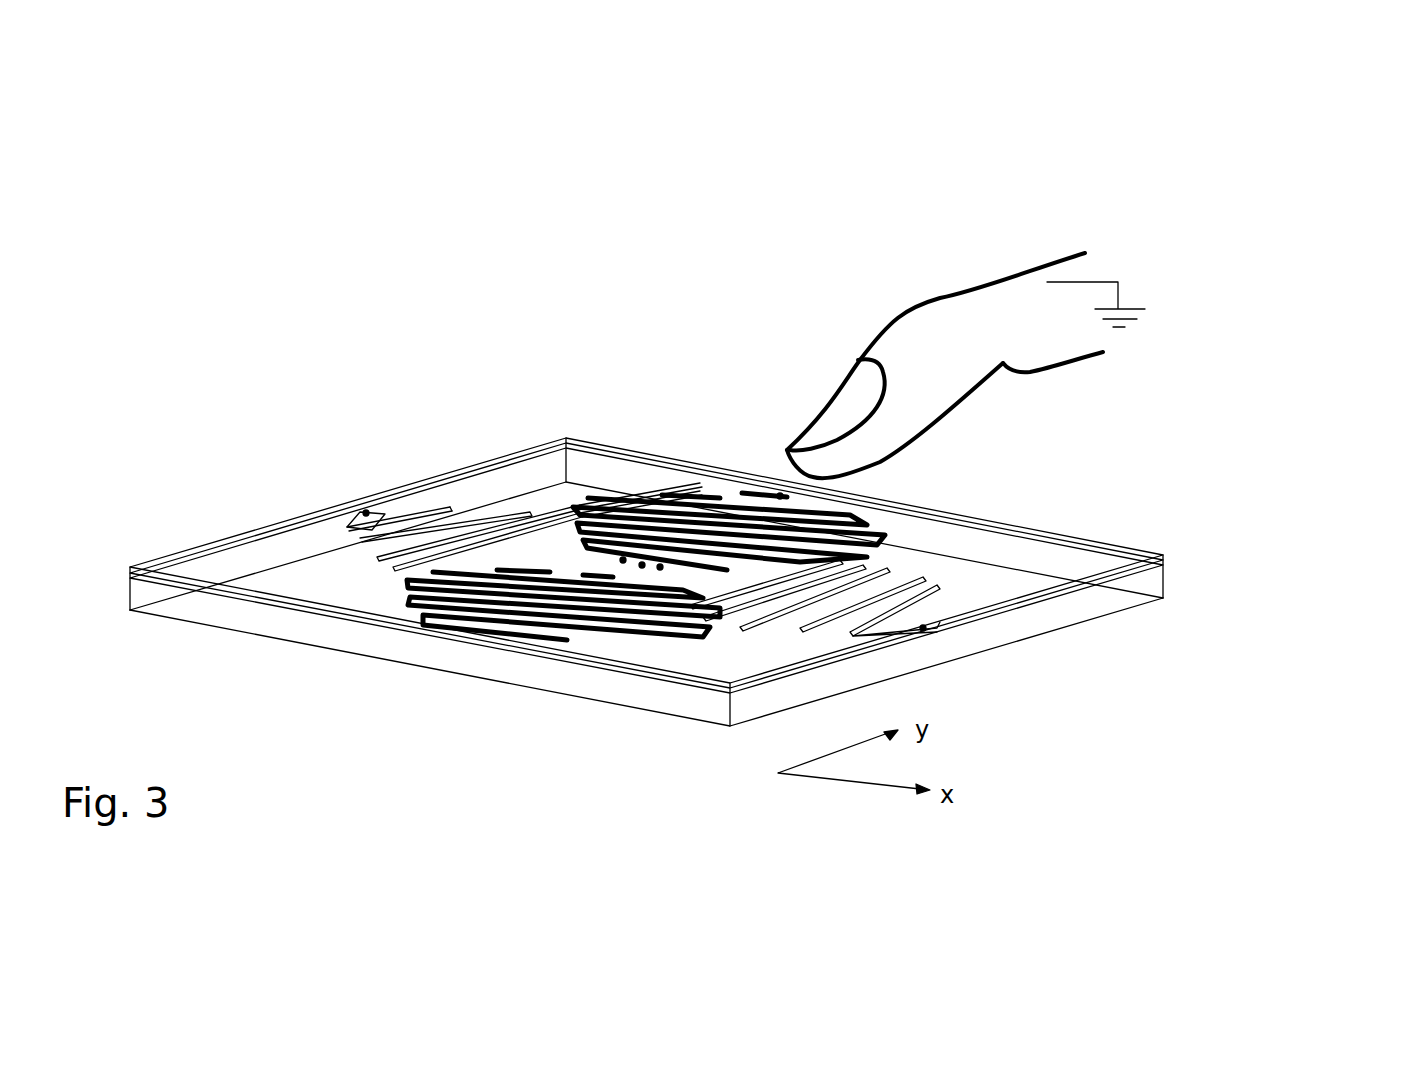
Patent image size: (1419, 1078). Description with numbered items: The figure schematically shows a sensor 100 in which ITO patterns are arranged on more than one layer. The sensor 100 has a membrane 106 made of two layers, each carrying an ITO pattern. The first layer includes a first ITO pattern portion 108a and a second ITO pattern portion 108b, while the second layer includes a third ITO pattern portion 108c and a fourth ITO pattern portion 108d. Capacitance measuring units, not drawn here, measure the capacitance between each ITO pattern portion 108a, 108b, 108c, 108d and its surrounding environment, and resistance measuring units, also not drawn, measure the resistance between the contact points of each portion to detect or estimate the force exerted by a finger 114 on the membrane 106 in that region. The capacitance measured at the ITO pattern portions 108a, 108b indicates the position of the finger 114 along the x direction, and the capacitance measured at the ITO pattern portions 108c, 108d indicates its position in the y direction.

The sensor 100 is at (1215, 98).
The membrane 106 is at (1178, 552).
The first ITO pattern portion 108a is at (485, 520).
The second ITO pattern portion 108b is at (893, 594).
The third ITO pattern portion 108c is at (712, 502).
The fourth ITO pattern portion 108d is at (593, 638).
The finger 114 is at (940, 300).